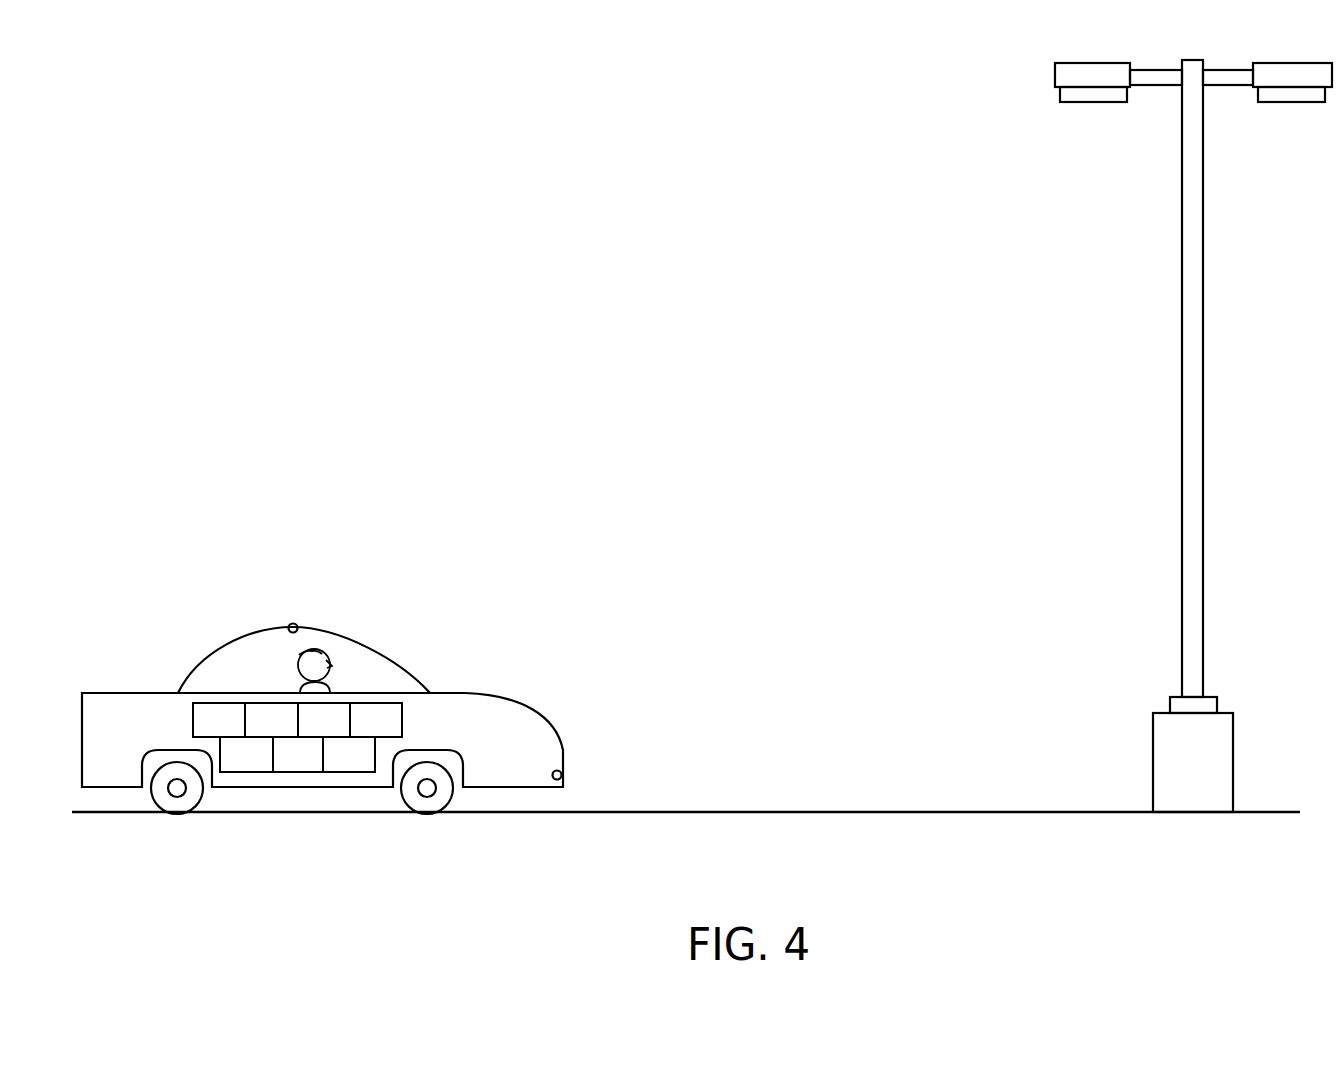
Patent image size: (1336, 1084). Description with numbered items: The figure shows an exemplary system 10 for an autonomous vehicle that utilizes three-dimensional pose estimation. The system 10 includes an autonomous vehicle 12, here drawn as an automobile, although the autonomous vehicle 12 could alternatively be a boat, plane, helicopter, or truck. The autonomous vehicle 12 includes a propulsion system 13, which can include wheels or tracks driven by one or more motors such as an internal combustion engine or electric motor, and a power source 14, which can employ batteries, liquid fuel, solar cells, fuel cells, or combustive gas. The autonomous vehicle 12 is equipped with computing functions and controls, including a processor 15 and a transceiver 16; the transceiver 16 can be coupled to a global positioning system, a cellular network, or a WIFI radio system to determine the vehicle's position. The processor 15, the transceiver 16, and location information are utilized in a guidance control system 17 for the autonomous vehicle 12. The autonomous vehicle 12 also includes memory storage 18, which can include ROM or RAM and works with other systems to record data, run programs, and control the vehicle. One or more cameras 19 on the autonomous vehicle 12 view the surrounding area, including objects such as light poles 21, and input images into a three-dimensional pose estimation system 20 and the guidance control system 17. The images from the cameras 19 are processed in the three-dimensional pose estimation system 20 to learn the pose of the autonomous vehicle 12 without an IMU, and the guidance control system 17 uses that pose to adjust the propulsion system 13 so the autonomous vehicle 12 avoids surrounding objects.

The system 10 is at (777, 109).
The autonomous vehicle 12 is at (141, 662).
The propulsion system 13 is at (205, 733).
The power source 14 is at (257, 733).
The processor 15 is at (310, 733).
The transceiver 16 is at (362, 733).
The guidance control system 17 is at (232, 767).
The memory storage 18 is at (284, 767).
The cameras 19 is at (294, 619).
The three-dimensional pose estimation system 20 is at (335, 767).
The light poles 21 is at (1143, 335).